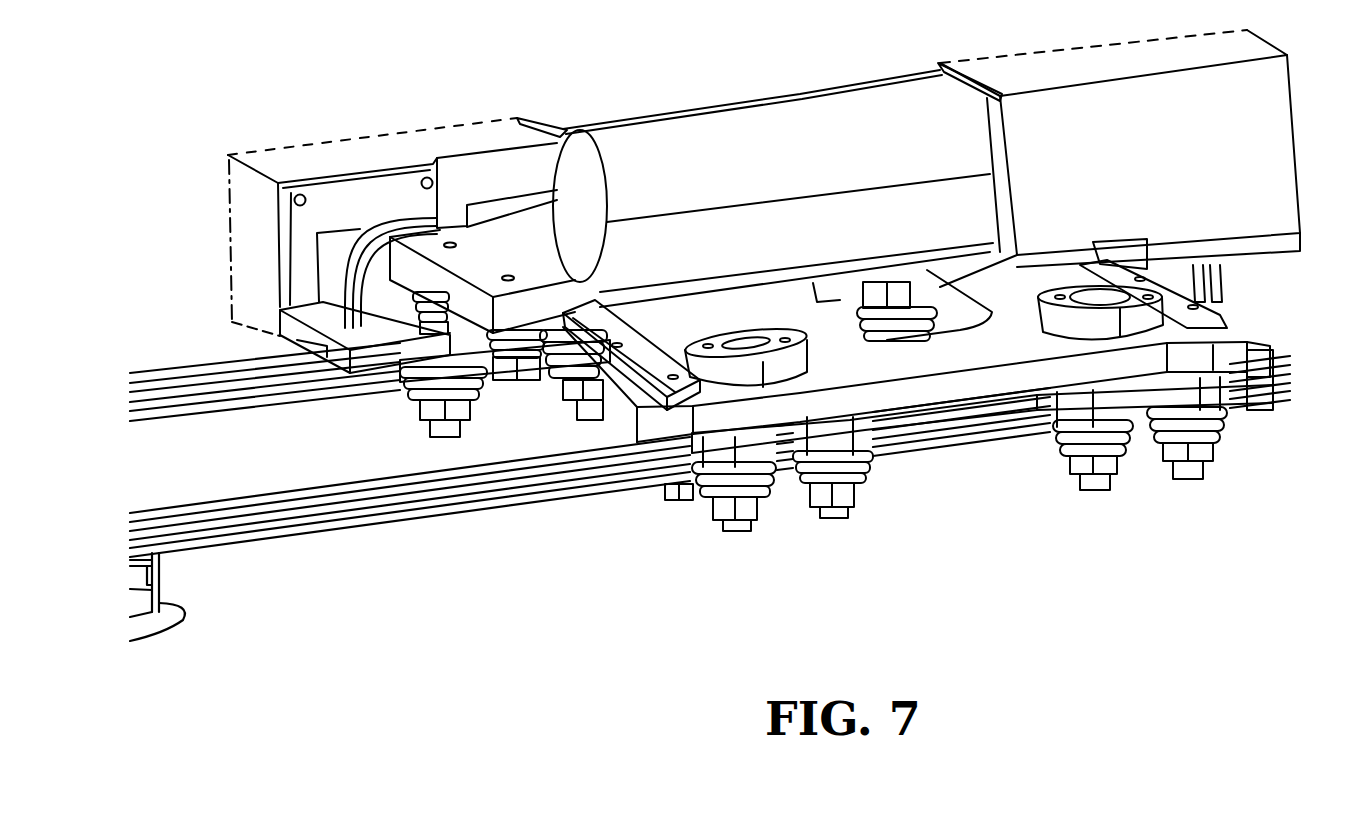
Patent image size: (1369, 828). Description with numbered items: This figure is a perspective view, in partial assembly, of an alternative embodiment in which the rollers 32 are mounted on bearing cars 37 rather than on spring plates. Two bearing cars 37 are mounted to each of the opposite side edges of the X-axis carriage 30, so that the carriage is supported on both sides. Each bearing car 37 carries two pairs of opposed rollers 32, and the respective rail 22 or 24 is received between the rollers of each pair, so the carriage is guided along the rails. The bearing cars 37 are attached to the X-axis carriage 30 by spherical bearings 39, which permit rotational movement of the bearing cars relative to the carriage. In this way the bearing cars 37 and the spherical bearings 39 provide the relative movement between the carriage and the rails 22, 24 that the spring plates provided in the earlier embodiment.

The rail 22 is at (283, 530).
The rail 24 is at (183, 383).
The X-axis carriage 30 is at (933, 385).
The rollers 32 is at (802, 490).
The bearing car 37 is at (790, 455).
The spherical bearing 39 is at (710, 340).